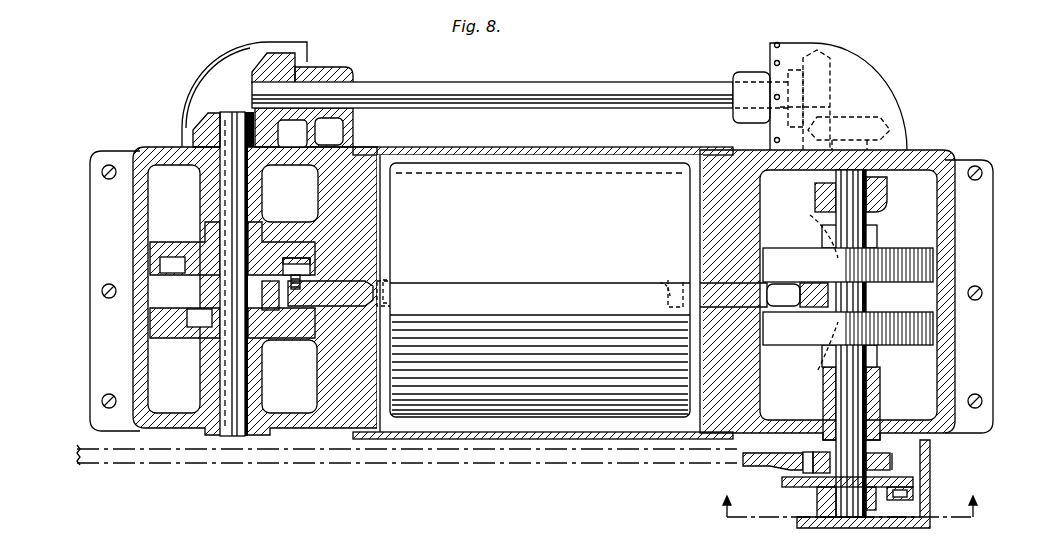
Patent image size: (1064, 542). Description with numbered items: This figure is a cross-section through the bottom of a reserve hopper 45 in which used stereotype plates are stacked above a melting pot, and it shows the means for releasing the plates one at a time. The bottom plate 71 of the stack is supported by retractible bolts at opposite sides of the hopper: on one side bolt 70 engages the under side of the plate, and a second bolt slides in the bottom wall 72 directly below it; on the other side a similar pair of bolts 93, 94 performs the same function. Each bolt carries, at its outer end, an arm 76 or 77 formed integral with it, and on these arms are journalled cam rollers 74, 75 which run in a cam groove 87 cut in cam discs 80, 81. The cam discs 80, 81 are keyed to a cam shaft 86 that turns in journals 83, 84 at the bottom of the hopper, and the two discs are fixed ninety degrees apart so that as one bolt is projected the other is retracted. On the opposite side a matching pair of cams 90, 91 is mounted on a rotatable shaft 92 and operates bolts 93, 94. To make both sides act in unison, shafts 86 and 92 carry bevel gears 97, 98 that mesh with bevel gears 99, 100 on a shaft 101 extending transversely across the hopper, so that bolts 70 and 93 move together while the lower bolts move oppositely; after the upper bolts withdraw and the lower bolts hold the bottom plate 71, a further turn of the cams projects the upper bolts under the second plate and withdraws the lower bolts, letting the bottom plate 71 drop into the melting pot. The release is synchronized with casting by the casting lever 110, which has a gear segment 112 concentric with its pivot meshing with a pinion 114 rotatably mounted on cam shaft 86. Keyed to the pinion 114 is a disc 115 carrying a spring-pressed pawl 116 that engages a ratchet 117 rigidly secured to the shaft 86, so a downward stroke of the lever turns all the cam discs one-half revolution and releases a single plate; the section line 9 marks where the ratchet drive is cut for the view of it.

The section line 9- 9 is at (844, 516).
The hopper 45 is at (497, 439).
The retractible bolt 70 is at (670, 283).
The bottom plate 71 is at (540, 290).
The bottom wall 72 is at (358, 230).
The cam roller 74 is at (826, 236).
The cam roller 75 is at (825, 360).
The arm 76 is at (790, 290).
The arm 77 is at (812, 322).
The cam disc 80 is at (917, 250).
The cam disc 81 is at (920, 330).
The journal 83 is at (878, 204).
The journal 84 is at (873, 397).
The cam shaft 86 is at (852, 297).
The cam groove 87 is at (810, 301).
The cam 90 is at (170, 242).
The cam 91 is at (167, 340).
The rotatable shaft 92 is at (228, 430).
The bolt 93 is at (400, 295).
The bolt 94 is at (293, 310).
The bevel gear 97 is at (890, 127).
The bevel gear 98 is at (207, 117).
The bevel gear 99 is at (830, 62).
The bevel gear 100 is at (252, 70).
The rotatable shaft 101 is at (515, 97).
The casting lever 110 is at (100, 463).
The gear segment 112 is at (760, 468).
The pinion 114 is at (892, 463).
The disc 115 is at (913, 482).
The pawl 116 is at (913, 494).
The ratchet 117 is at (817, 497).